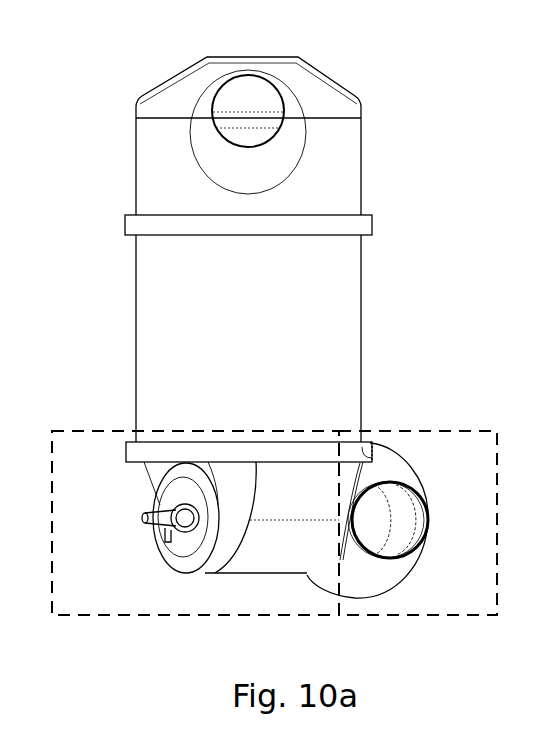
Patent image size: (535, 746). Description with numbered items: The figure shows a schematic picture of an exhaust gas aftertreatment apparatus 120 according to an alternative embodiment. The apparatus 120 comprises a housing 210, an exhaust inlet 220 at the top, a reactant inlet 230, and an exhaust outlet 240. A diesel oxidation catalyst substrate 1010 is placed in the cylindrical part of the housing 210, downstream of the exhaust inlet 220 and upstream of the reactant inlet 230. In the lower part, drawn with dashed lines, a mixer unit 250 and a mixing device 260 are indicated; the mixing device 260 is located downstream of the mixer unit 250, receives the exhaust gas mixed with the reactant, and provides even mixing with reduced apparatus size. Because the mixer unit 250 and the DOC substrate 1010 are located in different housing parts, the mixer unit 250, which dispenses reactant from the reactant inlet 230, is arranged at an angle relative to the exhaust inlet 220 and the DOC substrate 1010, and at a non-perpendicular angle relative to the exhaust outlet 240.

The apparatus for aftertreatment of exhaust gas 120 is at (408, 73).
The housing 210 is at (135, 153).
The exhaust inlet 220 is at (250, 76).
The diesel oxidation catalyst (DOC) substrate 1010 is at (137, 308).
The mixer unit 250 is at (110, 430).
The mixing device 260 is at (435, 431).
The reactant inlet 230 is at (140, 518).
The exhaust outlet 240 is at (423, 507).